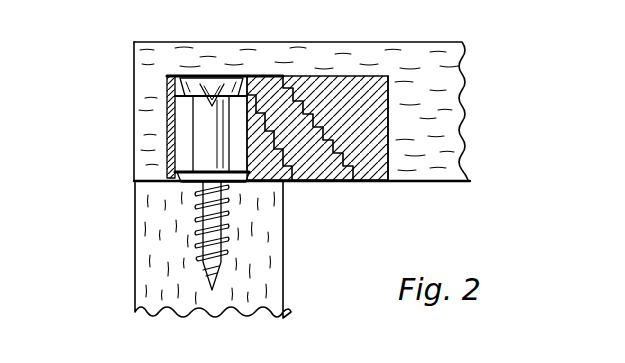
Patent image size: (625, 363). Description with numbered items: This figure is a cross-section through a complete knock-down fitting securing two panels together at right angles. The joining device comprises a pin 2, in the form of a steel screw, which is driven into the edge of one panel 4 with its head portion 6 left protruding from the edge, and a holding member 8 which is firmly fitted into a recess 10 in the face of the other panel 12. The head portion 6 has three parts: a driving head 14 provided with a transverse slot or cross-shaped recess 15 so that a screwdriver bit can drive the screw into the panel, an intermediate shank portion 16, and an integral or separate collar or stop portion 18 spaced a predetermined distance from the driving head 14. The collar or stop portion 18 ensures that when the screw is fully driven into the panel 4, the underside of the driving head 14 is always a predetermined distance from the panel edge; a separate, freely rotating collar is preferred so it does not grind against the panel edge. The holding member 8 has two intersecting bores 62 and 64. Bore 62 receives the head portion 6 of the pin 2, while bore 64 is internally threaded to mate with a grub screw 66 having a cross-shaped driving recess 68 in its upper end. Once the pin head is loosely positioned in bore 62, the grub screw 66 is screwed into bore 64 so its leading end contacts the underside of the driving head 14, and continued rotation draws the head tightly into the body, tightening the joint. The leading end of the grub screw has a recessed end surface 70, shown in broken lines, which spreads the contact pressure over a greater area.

The pin 2 is at (222, 238).
The panel 4 is at (279, 282).
The head portion 6 is at (220, 100).
The holding member 8 is at (332, 126).
The recess 10 is at (393, 128).
The panel 12 is at (421, 56).
The driving head 14 is at (172, 90).
The cross-shaped recess 15 is at (212, 82).
The intermediate shank portion 16 is at (170, 150).
The collar or stop portion 18 is at (172, 175).
The bore 62 is at (186, 125).
The bore 64 is at (345, 184).
The grub screw 66 is at (281, 92).
The cross-shaped driving recess 68 is at (298, 188).
The recessed end surface 70 is at (252, 84).